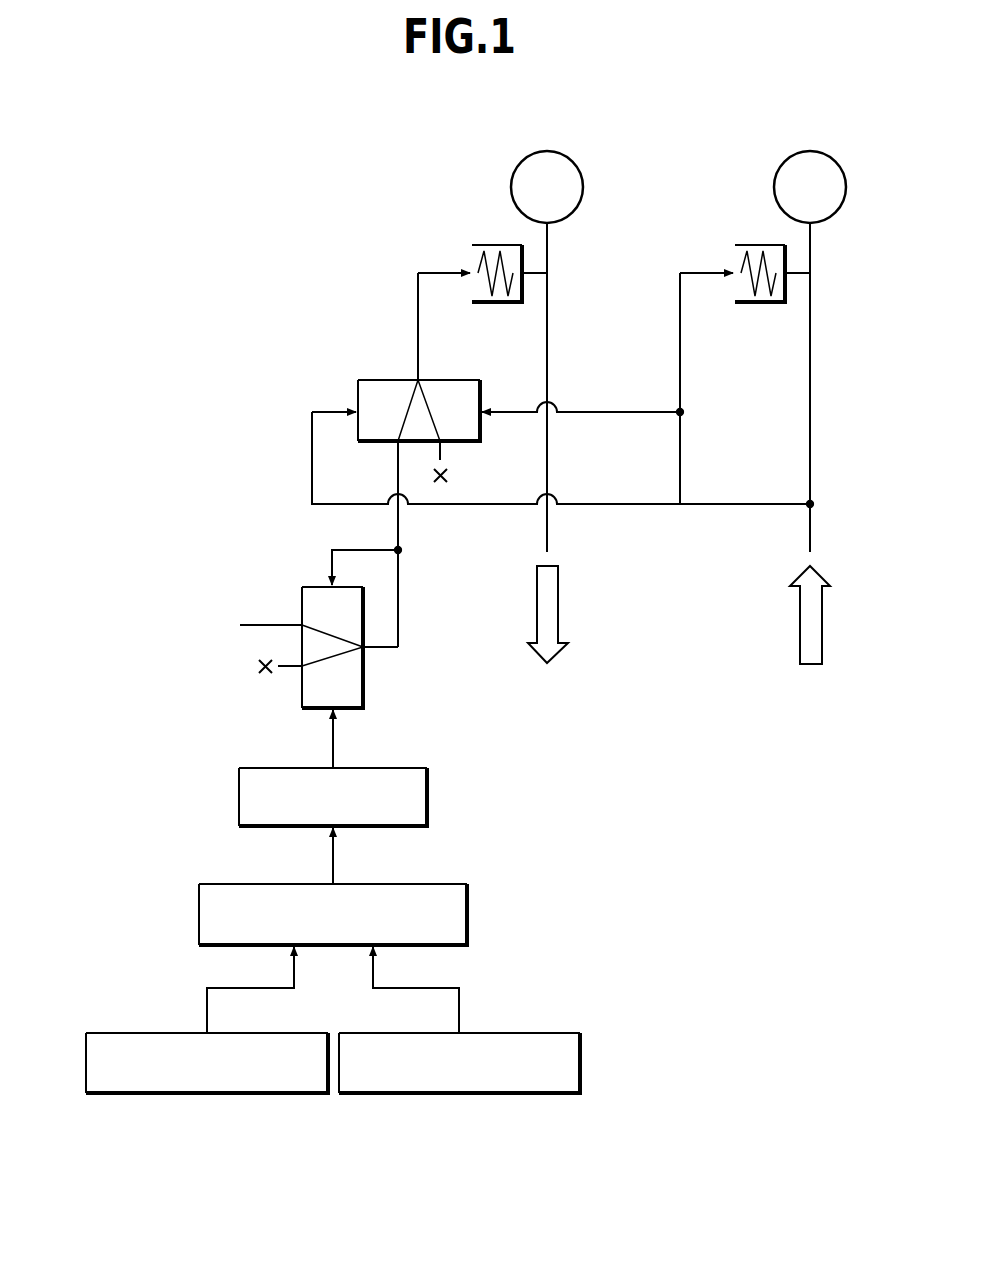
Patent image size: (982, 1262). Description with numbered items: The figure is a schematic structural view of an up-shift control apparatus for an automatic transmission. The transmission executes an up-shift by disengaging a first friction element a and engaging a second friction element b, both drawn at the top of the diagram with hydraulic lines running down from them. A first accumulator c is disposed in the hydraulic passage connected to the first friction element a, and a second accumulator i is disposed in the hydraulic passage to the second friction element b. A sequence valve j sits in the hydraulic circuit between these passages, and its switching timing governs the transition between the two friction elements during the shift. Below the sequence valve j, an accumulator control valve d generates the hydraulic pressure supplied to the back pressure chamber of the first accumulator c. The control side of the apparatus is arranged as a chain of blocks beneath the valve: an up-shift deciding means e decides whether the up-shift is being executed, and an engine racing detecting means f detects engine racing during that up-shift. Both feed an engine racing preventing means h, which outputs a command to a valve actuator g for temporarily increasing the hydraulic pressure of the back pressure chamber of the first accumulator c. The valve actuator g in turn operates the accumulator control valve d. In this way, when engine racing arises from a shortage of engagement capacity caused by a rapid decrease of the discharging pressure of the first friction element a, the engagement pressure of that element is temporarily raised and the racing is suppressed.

The first friction element a is at (578, 170).
The second friction element b is at (772, 182).
The first accumulator c is at (490, 303).
The accumulator control valve d is at (365, 686).
The up-shift deciding means e is at (148, 1033).
The engine racing detecting means f is at (540, 1033).
The valve actuator g is at (430, 796).
The engine racing preventing means h is at (470, 913).
The second accumulator i is at (752, 303).
The sequence valve j is at (385, 380).